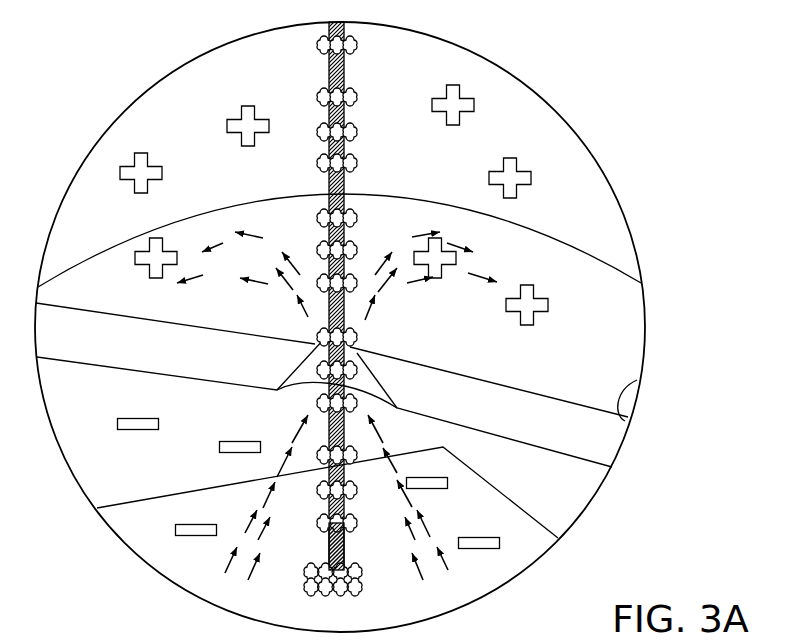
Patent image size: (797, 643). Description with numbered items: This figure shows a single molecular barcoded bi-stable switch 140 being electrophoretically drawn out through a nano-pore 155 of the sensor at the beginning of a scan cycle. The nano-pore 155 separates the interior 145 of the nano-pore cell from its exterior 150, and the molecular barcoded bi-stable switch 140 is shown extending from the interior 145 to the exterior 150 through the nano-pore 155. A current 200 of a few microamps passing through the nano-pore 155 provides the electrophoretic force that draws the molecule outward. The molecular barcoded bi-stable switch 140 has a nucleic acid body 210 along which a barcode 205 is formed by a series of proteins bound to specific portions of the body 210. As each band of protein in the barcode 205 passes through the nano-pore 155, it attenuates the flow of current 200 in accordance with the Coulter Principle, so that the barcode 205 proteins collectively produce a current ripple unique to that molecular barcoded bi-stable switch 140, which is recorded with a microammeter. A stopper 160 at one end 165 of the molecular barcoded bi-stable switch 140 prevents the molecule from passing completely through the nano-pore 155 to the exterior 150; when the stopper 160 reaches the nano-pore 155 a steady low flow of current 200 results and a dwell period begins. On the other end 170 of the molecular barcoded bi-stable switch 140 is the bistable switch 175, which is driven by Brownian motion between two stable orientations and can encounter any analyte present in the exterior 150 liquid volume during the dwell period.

The molecular barcoded bi-stable switch 140 is at (257, 22).
The interior 145 is at (160, 474).
The exterior 150 is at (201, 144).
The nano-pore 155 is at (318, 340).
The stopper 160 is at (366, 590).
The end 165 is at (326, 566).
The other end 170 is at (356, 128).
The bistable switch 175 is at (318, 22).
The current 200 is at (480, 272).
The barcode 205 is at (372, 143).
The nucleic acid body 210 is at (327, 192).